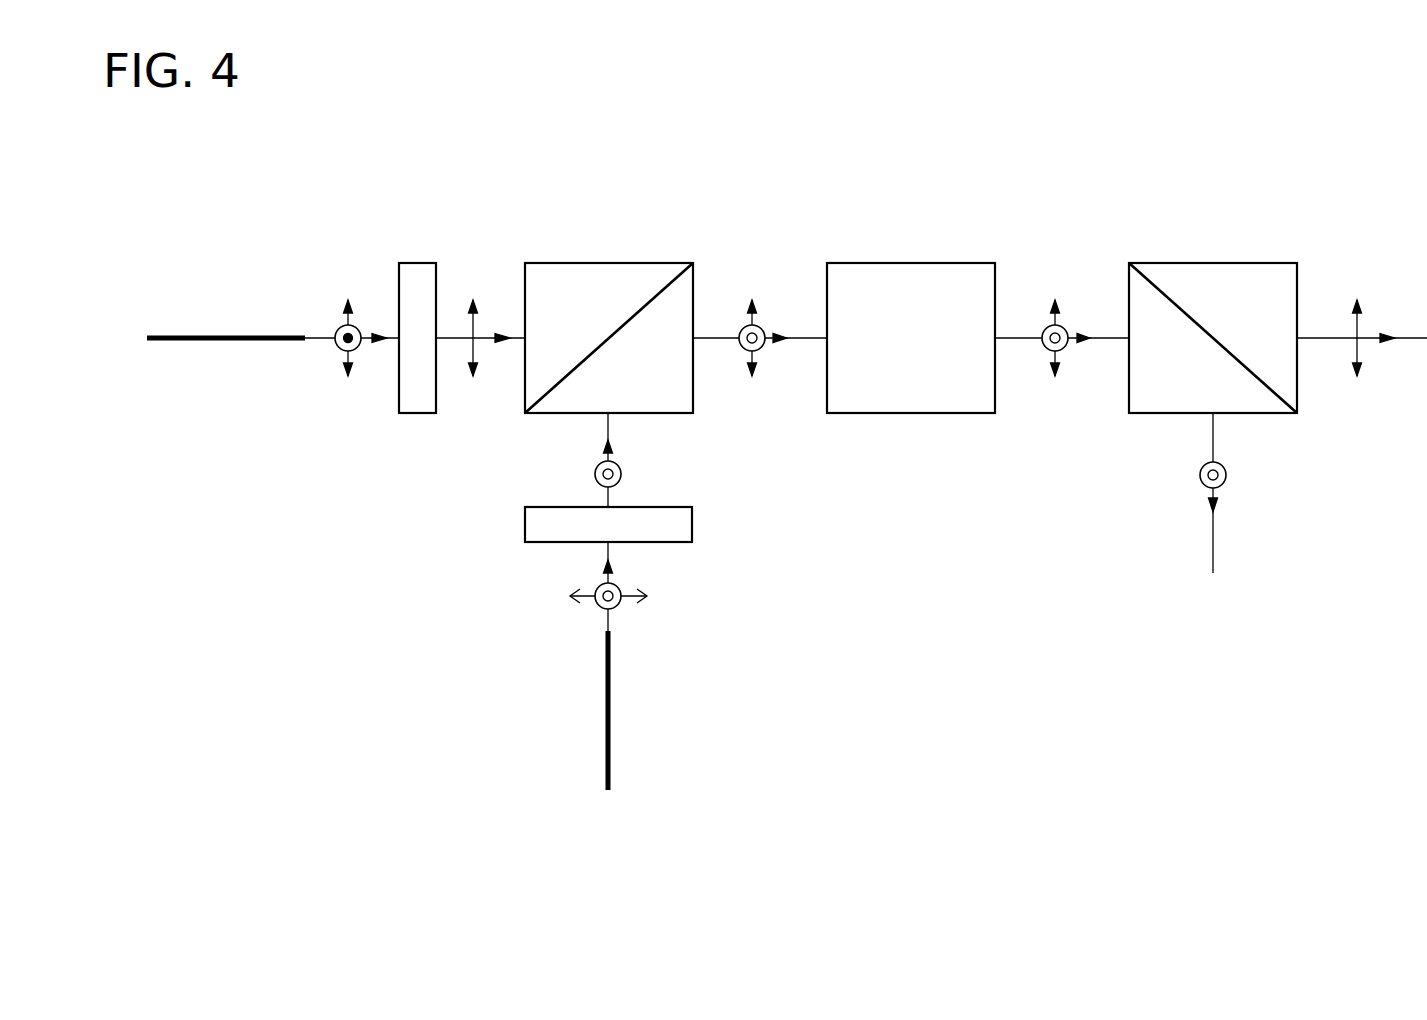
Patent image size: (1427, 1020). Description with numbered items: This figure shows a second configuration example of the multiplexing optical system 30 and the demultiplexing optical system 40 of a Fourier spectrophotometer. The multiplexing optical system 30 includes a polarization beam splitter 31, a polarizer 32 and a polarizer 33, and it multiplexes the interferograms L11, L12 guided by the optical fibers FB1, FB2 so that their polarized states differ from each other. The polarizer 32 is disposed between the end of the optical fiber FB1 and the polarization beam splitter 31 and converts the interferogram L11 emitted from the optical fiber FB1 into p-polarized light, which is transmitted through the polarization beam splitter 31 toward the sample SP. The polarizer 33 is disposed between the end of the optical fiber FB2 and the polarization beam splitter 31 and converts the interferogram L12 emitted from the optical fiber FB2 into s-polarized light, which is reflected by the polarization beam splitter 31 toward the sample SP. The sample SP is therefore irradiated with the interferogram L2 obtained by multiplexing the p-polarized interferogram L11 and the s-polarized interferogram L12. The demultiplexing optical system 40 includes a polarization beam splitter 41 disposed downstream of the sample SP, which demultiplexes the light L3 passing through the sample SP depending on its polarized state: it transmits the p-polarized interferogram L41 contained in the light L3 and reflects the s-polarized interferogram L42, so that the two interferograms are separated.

The multiplexing optical system 30 is at (669, 190).
The polarization beam splitter 31 is at (648, 263).
The polarizer 32 is at (436, 263).
The polarizer 33 is at (693, 522).
The demultiplexing optical system 40 is at (1268, 190).
The polarization beam splitter 41 is at (1240, 264).
The sample SP is at (937, 264).
The optical fiber FB1 is at (200, 335).
The optical fiber FB2 is at (612, 703).
The interferogram L11 is at (365, 334).
The interferogram L12 is at (597, 585).
The interferogram L2 is at (767, 335).
The light L3 is at (1070, 335).
The interferogram L41 is at (1372, 335).
The interferogram L42 is at (1210, 493).